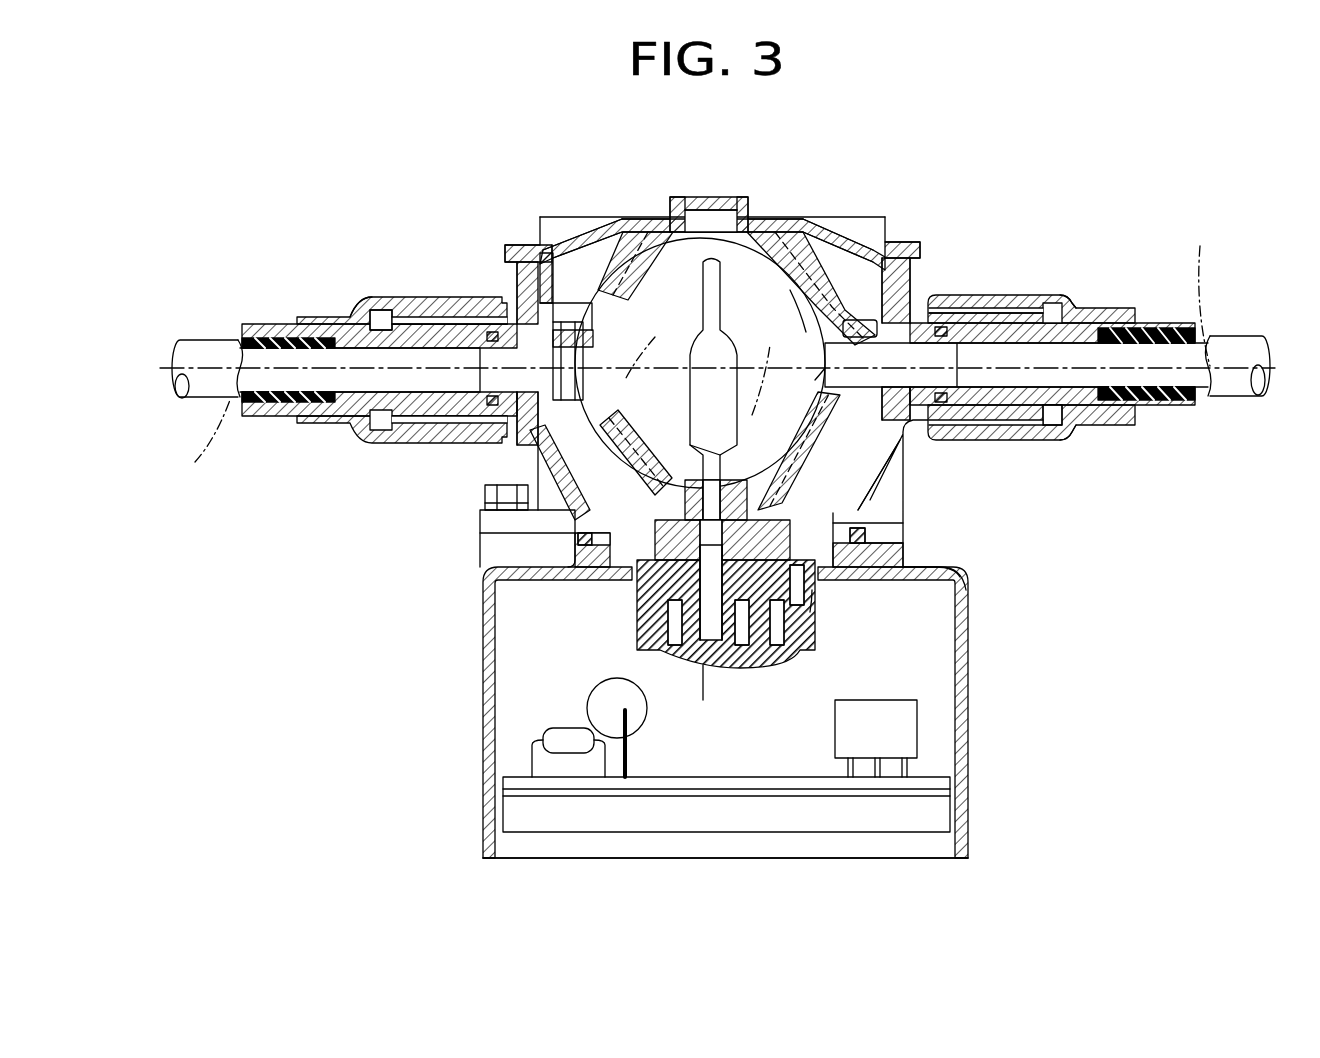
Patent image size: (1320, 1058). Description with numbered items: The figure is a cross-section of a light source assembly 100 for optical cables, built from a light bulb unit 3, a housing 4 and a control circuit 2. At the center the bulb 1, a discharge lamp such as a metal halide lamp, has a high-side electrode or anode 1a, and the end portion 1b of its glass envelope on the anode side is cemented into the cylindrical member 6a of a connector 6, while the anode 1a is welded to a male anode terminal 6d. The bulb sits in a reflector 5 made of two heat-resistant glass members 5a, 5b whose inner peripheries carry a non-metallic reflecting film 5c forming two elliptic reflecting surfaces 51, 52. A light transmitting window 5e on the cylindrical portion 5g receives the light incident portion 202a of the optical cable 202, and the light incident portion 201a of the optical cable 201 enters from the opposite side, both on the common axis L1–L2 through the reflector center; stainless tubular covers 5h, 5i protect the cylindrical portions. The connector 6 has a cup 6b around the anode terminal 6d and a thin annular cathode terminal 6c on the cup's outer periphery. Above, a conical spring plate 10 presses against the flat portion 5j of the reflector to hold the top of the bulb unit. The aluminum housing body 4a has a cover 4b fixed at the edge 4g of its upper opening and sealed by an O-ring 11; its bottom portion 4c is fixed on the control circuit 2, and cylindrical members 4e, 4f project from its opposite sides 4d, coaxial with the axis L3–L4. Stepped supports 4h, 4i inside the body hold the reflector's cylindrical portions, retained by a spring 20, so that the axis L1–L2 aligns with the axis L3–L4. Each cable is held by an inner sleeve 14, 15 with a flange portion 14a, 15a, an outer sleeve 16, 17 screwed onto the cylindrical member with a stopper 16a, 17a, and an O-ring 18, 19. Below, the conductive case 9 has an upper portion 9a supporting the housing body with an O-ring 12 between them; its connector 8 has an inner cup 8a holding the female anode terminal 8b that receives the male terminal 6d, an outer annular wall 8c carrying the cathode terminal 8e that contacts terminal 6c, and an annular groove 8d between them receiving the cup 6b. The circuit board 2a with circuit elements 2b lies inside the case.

The light source assembly 100 is at (922, 160).
The bulb 1 is at (722, 298).
The high-side electrode (anode) 1a is at (655, 585).
The end portion of the glass envelope 1b is at (710, 455).
The control circuit 2 is at (972, 627).
The circuit board 2a is at (820, 790).
The circuit elements 2b is at (560, 752).
The light bulb unit 3 is at (604, 250).
The housing 4 is at (888, 478).
The housing body 4a is at (872, 500).
The cover 4b is at (608, 262).
The bottom portion of the housing body 4c is at (800, 468).
The opposite sides of the housing body 4d is at (898, 460).
The cylindrical member 4e is at (408, 326).
The cylindrical member 4f is at (1015, 285).
The edge of the upper opening 4g is at (515, 290).
The stepped support 4h is at (570, 450).
The stepped support 4i is at (860, 448).
The reflector 5 is at (818, 240).
The heat resistant glass member 5a is at (652, 233).
The heat resistant glass member 5b is at (773, 240).
The non-metallic reflecting film 5c is at (638, 266).
The light transmitting window 5e is at (803, 332).
The cylindrical portion 5g is at (843, 245).
The stainless tubular cover 5h is at (425, 418).
The stainless tubular cover 5i is at (905, 300).
The flat portion 5j is at (632, 240).
The connector 6 is at (590, 518).
The cylindrical member 6a is at (683, 492).
The cup 6b is at (815, 638).
The annular cathode terminal 6c is at (810, 578).
The male anode terminal 6d is at (673, 638).
The connector 8 is at (604, 596).
The inner cup 8a is at (745, 667).
The female anode terminal 8b is at (703, 665).
The outer annular wall 8c is at (810, 612).
The annular groove 8d is at (665, 650).
The cathode terminal 8e is at (600, 560).
The case 9 is at (958, 700).
The upper portion of the case 9a is at (940, 563).
The spring plate 10 is at (712, 215).
The O-ring 11 is at (905, 268).
The O-ring 12 is at (868, 532).
The inner sleeve 14 is at (352, 398).
The flange portion 14a is at (380, 297).
The inner sleeve 15 is at (1082, 395).
The flange portion 15a is at (1067, 292).
The outer sleeve 16 is at (317, 317).
The stopper 16a is at (363, 317).
The outer sleeve 17 is at (1127, 307).
The stopper 17a is at (1078, 414).
The O-ring 18 is at (495, 405).
The O-ring 19 is at (977, 428).
The spring 20 is at (522, 490).
The reflecting surface 51 is at (675, 200).
The reflecting surface 52 is at (747, 210).
The optical cable 201 is at (203, 340).
The light incident portion 201a is at (498, 350).
The optical cable 202 is at (1248, 336).
The light incident portion 202a is at (815, 380).
The common axis of the light transmitting windows L1 is at (653, 341).
The common axis of the light transmitting windows L2 is at (755, 380).
The axis of the cylindrical members L3 is at (204, 444).
The axis of the cylindrical members L4 is at (1211, 289).